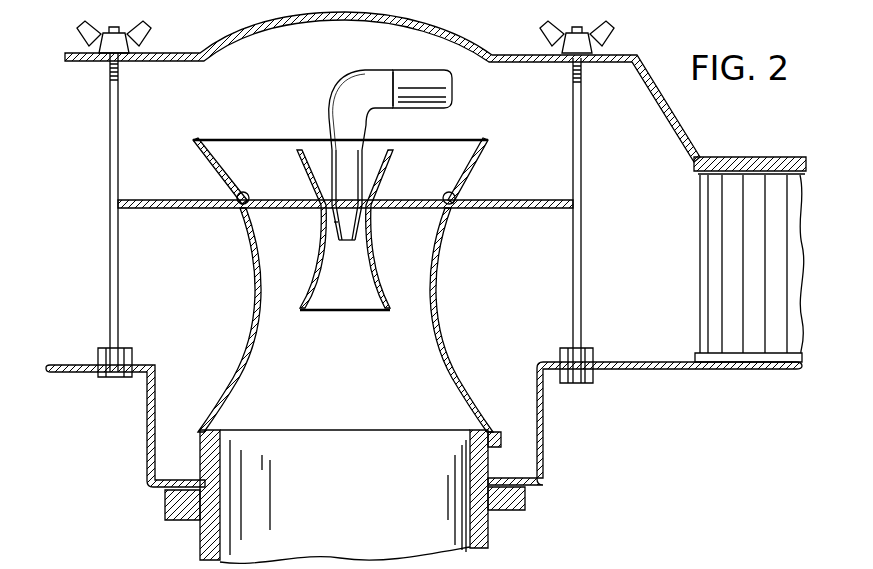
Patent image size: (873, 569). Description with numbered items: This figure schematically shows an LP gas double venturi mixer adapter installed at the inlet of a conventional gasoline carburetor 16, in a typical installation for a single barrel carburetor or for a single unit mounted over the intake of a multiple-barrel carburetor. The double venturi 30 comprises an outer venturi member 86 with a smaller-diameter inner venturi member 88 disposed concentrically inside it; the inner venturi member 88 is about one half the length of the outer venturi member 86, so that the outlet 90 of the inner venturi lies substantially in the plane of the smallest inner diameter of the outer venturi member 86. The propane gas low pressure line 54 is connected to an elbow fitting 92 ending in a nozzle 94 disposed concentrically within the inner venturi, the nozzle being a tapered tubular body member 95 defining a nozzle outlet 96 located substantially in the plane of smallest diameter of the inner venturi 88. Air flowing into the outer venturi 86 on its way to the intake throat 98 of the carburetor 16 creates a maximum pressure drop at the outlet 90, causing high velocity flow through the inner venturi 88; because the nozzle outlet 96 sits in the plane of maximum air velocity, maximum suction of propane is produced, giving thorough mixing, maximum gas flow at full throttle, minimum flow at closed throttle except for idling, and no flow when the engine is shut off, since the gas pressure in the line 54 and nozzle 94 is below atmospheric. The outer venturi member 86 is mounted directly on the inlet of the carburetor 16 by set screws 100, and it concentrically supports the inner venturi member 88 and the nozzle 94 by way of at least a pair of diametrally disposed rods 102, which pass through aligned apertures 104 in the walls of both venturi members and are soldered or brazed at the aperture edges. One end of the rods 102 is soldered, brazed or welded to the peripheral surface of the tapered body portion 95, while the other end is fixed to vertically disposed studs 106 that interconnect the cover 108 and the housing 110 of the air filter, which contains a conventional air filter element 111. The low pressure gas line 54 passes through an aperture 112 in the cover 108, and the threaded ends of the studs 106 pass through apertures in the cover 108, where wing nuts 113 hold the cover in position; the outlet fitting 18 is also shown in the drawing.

The carburetor 16 is at (530, 508).
The outlet fitting 18 is at (717, 373).
The double venturi 30 is at (243, 103).
The propane gas low pressure line 54 is at (416, 87).
The outer venturi member 86 is at (437, 306).
The inner venturi member 88 is at (377, 276).
The outlet of the inner venturi member 90 is at (340, 312).
The elbow fitting 92 is at (343, 101).
The nozzle 94 is at (358, 183).
The tapered tubular body member 95 is at (332, 223).
The nozzle outlet 96 is at (344, 246).
The intake throat 98 is at (387, 447).
The set screws 100 is at (521, 415).
The rods 102 is at (565, 200).
The apertures 104 is at (248, 198).
The studs 106 is at (118, 131).
The cover 108 is at (503, 30).
The housing 110 is at (655, 371).
The air filter element 111 is at (707, 242).
The aperture 112 is at (448, 92).
The wing nuts 113 is at (80, 33).